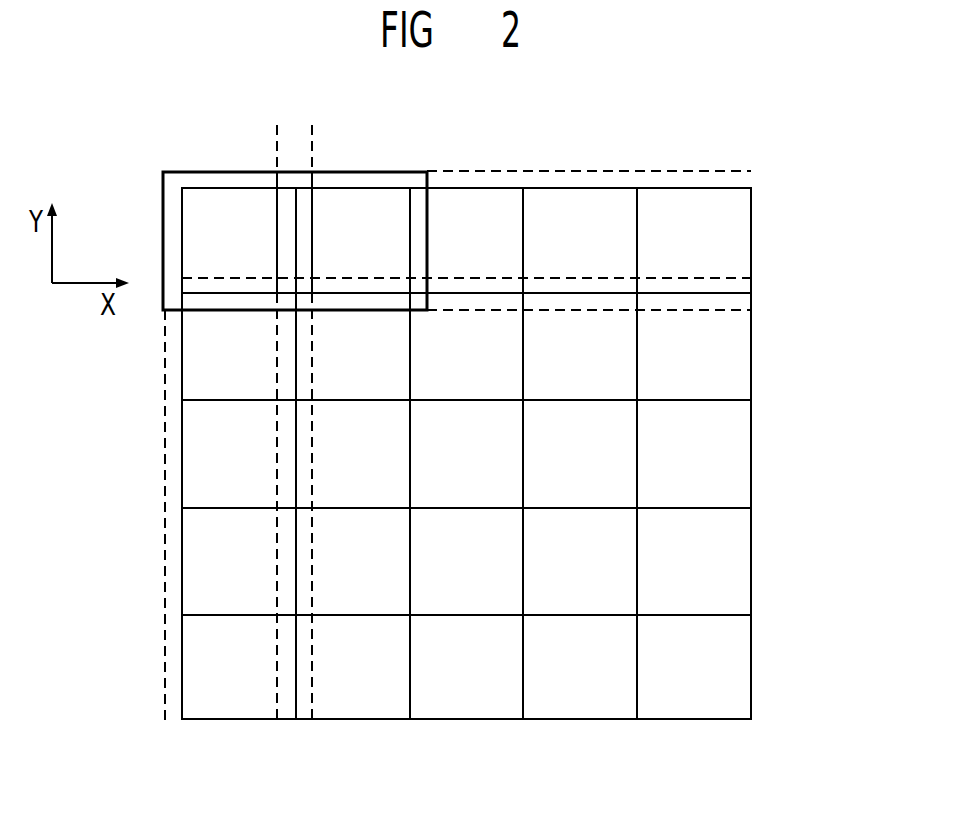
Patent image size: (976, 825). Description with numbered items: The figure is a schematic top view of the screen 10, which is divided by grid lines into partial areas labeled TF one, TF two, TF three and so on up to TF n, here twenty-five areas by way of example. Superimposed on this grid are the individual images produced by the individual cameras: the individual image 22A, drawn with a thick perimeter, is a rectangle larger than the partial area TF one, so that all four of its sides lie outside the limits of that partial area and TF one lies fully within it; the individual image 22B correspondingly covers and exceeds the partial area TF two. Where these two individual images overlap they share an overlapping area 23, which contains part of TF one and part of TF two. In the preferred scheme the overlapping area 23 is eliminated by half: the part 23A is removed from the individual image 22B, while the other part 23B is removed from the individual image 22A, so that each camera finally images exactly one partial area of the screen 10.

The screen 10 is at (751, 350).
The individual image 22A is at (205, 170).
The individual image 22B is at (388, 170).
The overlapping area 23 is at (237, 115).
The part of the overlapping area 23A is at (333, 288).
The other part of the overlapping area 23B is at (258, 257).